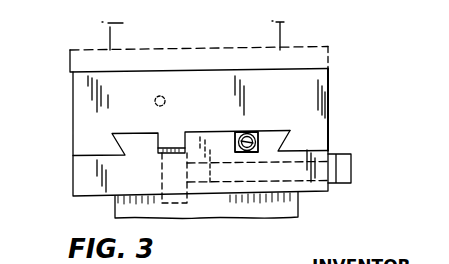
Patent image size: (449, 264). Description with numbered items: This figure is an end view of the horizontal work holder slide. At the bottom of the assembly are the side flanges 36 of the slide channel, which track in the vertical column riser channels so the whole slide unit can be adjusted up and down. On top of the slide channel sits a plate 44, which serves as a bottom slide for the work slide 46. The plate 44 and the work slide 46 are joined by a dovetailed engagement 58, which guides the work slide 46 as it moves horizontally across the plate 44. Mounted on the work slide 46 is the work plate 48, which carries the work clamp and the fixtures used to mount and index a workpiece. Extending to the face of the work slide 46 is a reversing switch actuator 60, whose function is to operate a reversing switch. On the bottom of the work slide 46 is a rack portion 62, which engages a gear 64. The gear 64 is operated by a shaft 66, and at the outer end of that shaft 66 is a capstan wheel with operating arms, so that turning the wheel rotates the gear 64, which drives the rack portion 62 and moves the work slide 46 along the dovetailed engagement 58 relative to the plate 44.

The side flanges 36 is at (285, 203).
The plate 44 is at (82, 162).
The work slide 46 is at (73, 93).
The work plate 48 is at (313, 50).
The dovetailed engagement 58 is at (292, 143).
The reversing switch actuator 60 is at (250, 131).
The rack portion 62 is at (170, 147).
The gear 64 is at (176, 172).
The shaft 66 is at (352, 164).